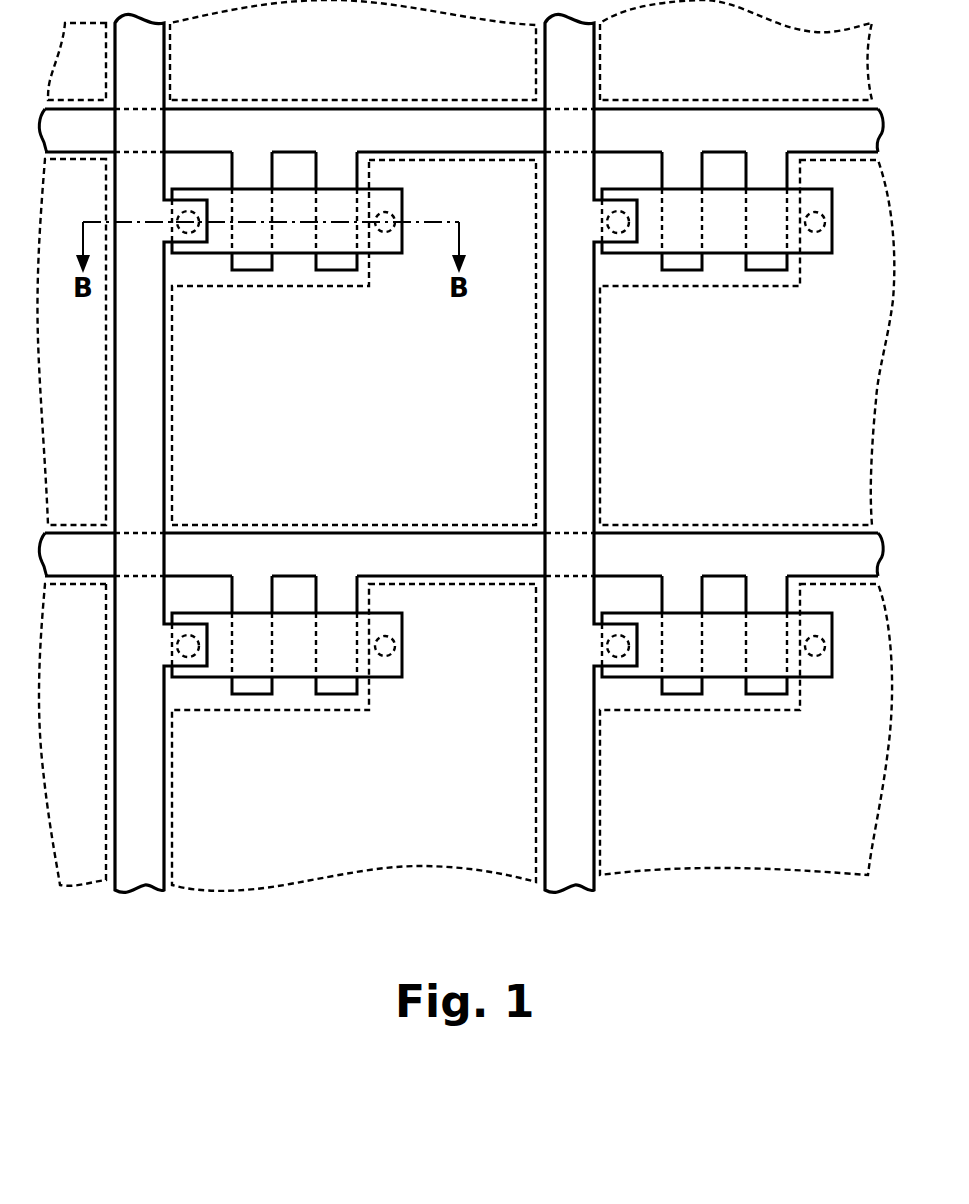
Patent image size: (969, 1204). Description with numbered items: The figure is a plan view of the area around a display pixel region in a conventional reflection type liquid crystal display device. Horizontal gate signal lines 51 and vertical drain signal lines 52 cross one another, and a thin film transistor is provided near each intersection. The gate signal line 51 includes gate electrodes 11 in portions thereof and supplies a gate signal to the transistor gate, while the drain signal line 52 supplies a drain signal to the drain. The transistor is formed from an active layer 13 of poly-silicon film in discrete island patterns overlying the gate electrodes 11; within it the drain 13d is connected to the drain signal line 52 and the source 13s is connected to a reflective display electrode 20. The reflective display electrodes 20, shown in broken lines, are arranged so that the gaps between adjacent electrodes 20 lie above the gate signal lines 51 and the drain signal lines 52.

The gate electrode 11 is at (254, 262).
The active layer 13 is at (387, 243).
The drain 13d is at (188, 234).
The source 13s is at (395, 204).
The reflective display electrode 20 is at (540, 415).
The gate signal line 51 is at (411, 116).
The drain signal line 52 is at (160, 56).